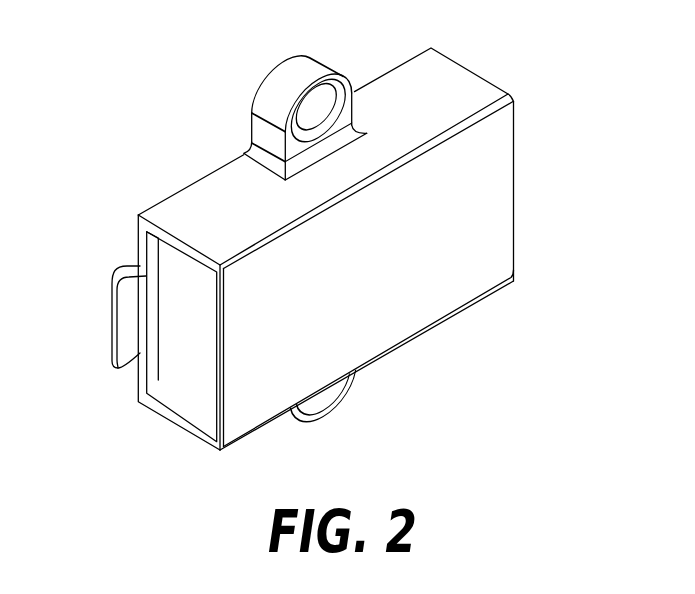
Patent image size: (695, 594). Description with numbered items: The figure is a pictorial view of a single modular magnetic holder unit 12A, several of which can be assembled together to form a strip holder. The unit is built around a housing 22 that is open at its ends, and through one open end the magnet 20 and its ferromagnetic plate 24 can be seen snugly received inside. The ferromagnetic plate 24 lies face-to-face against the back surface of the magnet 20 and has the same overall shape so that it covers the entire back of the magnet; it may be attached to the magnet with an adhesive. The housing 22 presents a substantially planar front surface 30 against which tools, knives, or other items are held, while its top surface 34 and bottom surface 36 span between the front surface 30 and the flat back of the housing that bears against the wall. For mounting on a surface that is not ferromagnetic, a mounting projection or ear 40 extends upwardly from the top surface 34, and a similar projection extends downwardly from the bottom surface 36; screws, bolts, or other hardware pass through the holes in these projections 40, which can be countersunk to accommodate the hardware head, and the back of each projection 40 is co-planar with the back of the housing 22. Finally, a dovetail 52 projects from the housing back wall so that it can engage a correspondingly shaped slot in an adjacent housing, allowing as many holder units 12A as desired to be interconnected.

The magnetic holder unit 12A is at (539, 256).
The magnet 20 is at (195, 377).
The housing 22 is at (514, 183).
The ferromagnetic plate 24 is at (153, 375).
The front surface 30 is at (359, 280).
The top surface 34 is at (435, 95).
The bottom surface 36 is at (366, 367).
The mounting projection 40 is at (279, 77).
The dovetail 52 is at (117, 322).